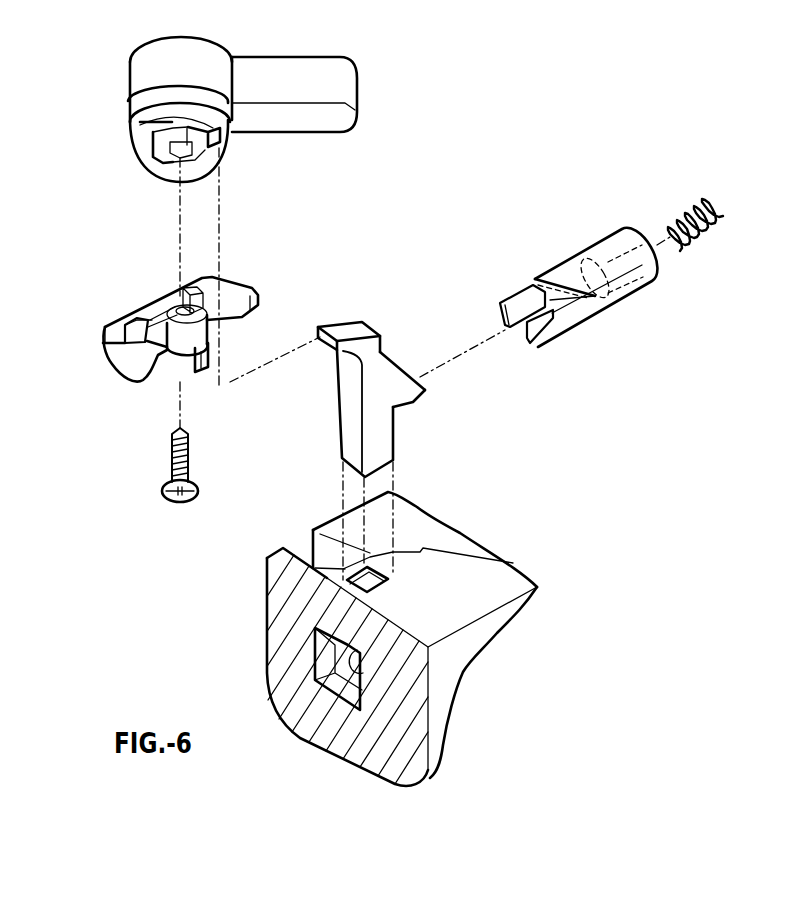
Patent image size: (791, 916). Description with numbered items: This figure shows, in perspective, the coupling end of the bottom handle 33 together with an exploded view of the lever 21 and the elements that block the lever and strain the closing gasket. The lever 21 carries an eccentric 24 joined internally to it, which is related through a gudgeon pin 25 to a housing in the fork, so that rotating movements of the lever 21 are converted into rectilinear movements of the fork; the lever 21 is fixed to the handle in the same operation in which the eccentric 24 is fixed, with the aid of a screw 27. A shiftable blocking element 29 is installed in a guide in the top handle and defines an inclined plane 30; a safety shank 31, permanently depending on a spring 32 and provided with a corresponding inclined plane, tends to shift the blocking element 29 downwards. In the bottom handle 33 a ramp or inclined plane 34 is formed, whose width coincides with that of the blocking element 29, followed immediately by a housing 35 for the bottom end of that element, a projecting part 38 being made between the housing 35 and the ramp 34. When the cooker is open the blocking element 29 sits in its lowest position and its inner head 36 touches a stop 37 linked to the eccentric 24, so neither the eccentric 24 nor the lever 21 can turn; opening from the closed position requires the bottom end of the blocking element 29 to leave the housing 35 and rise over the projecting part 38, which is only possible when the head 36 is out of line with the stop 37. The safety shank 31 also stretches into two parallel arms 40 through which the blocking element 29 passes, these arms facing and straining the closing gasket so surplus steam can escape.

The lever 21 is at (212, 60).
The eccentric 24 is at (120, 348).
The gudgeon pin 25 is at (120, 322).
The screw 27 is at (172, 482).
The blocking element 29 is at (385, 398).
The inclined plane 30 is at (403, 360).
The safety shank 31 is at (605, 250).
The spring 32 is at (690, 238).
The bottom handle 33 is at (507, 567).
The ramp or inclined plane 34 is at (270, 581).
The housing 35 is at (290, 593).
The inner head 36 is at (350, 320).
The stop 37 is at (202, 375).
The projecting part 38 is at (490, 551).
The parallel arms 40 is at (535, 307).